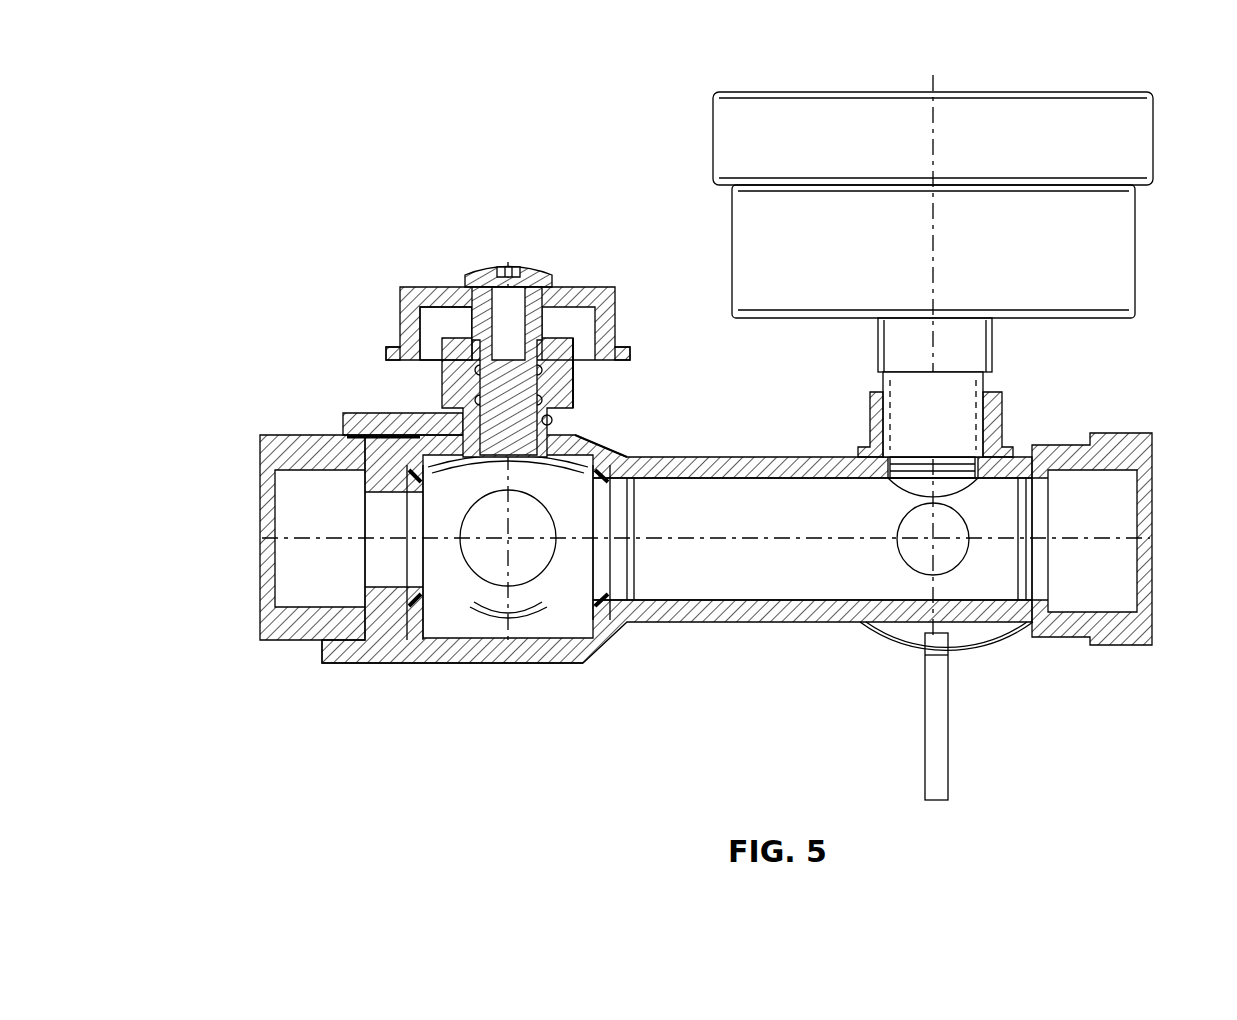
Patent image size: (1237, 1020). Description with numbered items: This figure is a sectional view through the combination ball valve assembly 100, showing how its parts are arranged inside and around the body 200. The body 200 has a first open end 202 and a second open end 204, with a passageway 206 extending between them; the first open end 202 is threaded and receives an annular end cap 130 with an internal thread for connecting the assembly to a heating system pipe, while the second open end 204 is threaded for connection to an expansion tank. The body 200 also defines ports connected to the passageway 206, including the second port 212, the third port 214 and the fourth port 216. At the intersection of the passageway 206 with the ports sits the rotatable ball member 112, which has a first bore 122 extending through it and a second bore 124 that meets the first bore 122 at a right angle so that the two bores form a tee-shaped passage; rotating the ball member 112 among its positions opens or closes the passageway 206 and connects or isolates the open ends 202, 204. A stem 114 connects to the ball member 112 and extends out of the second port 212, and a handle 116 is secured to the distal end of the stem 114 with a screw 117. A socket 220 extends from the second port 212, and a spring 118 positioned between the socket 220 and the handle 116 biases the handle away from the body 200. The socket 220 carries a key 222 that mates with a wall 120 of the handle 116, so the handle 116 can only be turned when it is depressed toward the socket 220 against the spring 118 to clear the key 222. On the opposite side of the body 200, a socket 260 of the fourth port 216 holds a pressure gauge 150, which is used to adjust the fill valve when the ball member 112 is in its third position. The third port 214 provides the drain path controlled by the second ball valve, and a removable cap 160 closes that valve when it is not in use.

The combination ball valve assembly 100 is at (600, 100).
The pressure gauge 150 is at (1037, 118).
The handle 116 is at (405, 283).
The screw 117 is at (470, 264).
The spring 118 is at (468, 323).
The wall 120 is at (447, 357).
The second port 212 is at (455, 418).
The key 222 is at (590, 348).
The socket 220 is at (572, 386).
The stem 114 is at (582, 441).
The ball member 112 is at (604, 455).
The annular end cap 130 is at (256, 474).
The first bore 122 is at (569, 494).
The second bore 124 is at (500, 568).
The passageway 206 is at (740, 532).
The fourth port 216 is at (900, 493).
The third port 214 is at (908, 556).
The socket 260 is at (1000, 428).
The second open end 204 is at (1128, 581).
The first open end 202 is at (330, 640).
The body 200 is at (813, 628).
The removable cap 160 is at (950, 677).